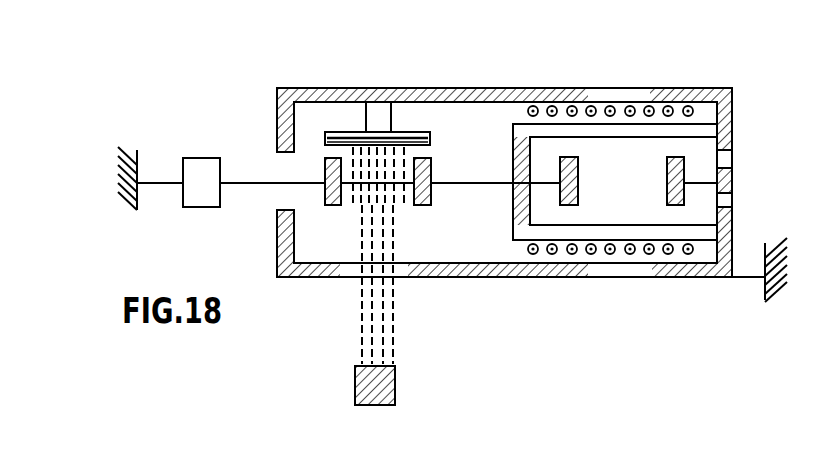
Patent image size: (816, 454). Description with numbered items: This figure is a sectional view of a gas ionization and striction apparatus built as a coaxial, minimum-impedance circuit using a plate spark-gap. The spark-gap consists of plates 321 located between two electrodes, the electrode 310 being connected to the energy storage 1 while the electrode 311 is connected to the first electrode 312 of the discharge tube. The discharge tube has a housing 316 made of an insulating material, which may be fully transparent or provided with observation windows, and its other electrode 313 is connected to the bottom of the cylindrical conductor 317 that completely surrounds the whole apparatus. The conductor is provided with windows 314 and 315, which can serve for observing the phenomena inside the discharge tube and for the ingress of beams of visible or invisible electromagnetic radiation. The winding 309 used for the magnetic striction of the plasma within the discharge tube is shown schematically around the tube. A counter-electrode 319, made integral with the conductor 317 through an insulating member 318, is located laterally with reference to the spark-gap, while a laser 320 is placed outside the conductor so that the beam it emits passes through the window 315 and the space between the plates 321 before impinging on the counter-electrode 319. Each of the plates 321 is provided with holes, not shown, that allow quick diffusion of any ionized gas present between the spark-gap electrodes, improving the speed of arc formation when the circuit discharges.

The energy storage 1 is at (200, 173).
The winding 309 is at (570, 110).
The electrode 310 is at (323, 193).
The electrode 311 is at (422, 207).
The first electrode 312 is at (562, 197).
The other electrode 313 is at (675, 203).
The window 314 is at (734, 198).
The window 315 is at (400, 284).
The housing 316 is at (668, 130).
The cylindrical conductor 317 is at (427, 90).
The insulating member 318 is at (372, 108).
The counter-electrode 319 is at (337, 133).
The laser 320 is at (355, 372).
The plates 321 is at (355, 203).